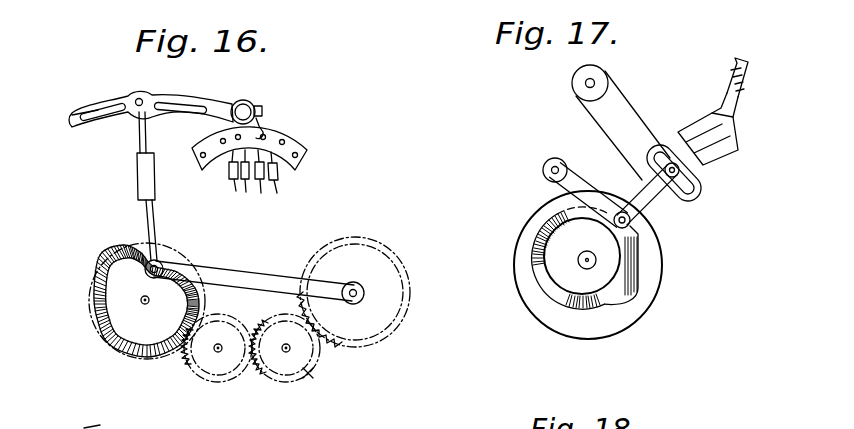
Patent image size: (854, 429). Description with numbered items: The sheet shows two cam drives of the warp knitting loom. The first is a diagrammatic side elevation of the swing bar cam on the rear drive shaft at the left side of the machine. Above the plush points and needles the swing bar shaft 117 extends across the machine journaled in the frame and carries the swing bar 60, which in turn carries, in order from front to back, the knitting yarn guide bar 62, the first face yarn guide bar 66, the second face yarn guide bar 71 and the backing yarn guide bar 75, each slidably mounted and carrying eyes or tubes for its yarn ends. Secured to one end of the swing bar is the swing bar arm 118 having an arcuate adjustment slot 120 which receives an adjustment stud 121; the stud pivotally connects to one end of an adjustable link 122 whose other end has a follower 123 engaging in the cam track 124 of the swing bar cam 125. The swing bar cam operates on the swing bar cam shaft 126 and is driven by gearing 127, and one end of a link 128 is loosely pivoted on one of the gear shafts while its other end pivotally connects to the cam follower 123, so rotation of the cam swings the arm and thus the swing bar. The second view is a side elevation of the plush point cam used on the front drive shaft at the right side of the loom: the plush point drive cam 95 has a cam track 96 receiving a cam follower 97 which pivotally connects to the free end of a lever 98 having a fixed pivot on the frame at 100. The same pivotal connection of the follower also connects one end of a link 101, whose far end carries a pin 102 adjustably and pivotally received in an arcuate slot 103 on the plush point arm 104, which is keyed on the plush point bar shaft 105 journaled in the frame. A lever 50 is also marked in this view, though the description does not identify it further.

In FIG. 16, the swing bar 60 is at (293, 142).
In FIG. 16, the knitting yarn guide bar 62 is at (230, 170).
In FIG. 16, the first face yarn guide bar 66 is at (246, 180).
In FIG. 16, the second face yarn guide bar 71 is at (261, 181).
In FIG. 16, the backing yarn guide bar 75 is at (276, 175).
In FIG. 16, the swing bar shaft 117 is at (247, 108).
In FIG. 16, the swing bar arm 118 is at (174, 93).
In FIG. 16, the arcuate adjustment slot 120 is at (98, 110).
In FIG. 16, the adjustment stud 121 is at (139, 99).
In FIG. 16, the adjustable link 122 is at (137, 150).
In FIG. 16, the follower 123 is at (163, 260).
In FIG. 16, the cam track 124 is at (118, 244).
In FIG. 16, the swing bar cam 125 is at (95, 272).
In FIG. 16, the swing bar cam shaft 126 is at (141, 303).
In FIG. 16, the gearing 127 is at (352, 338).
In FIG. 16, the link 128 is at (268, 279).
In FIG. 17, the lever 50 is at (733, 118).
In FIG. 17, the plush point drive cam 95 is at (627, 313).
In FIG. 17, the cam track 96 is at (638, 243).
In FIG. 17, the cam follower 97 is at (617, 226).
In FIG. 17, the lever 98 is at (583, 184).
In FIG. 17, the fixed pivot 100 is at (551, 169).
In FIG. 17, the link 101 is at (652, 195).
In FIG. 17, the pin 102 is at (682, 168).
In FIG. 17, the arcuate slot 103 is at (697, 191).
In FIG. 17, the plush point arm 104 is at (635, 122).
In FIG. 17, the plush point bar shaft 105 is at (583, 83).